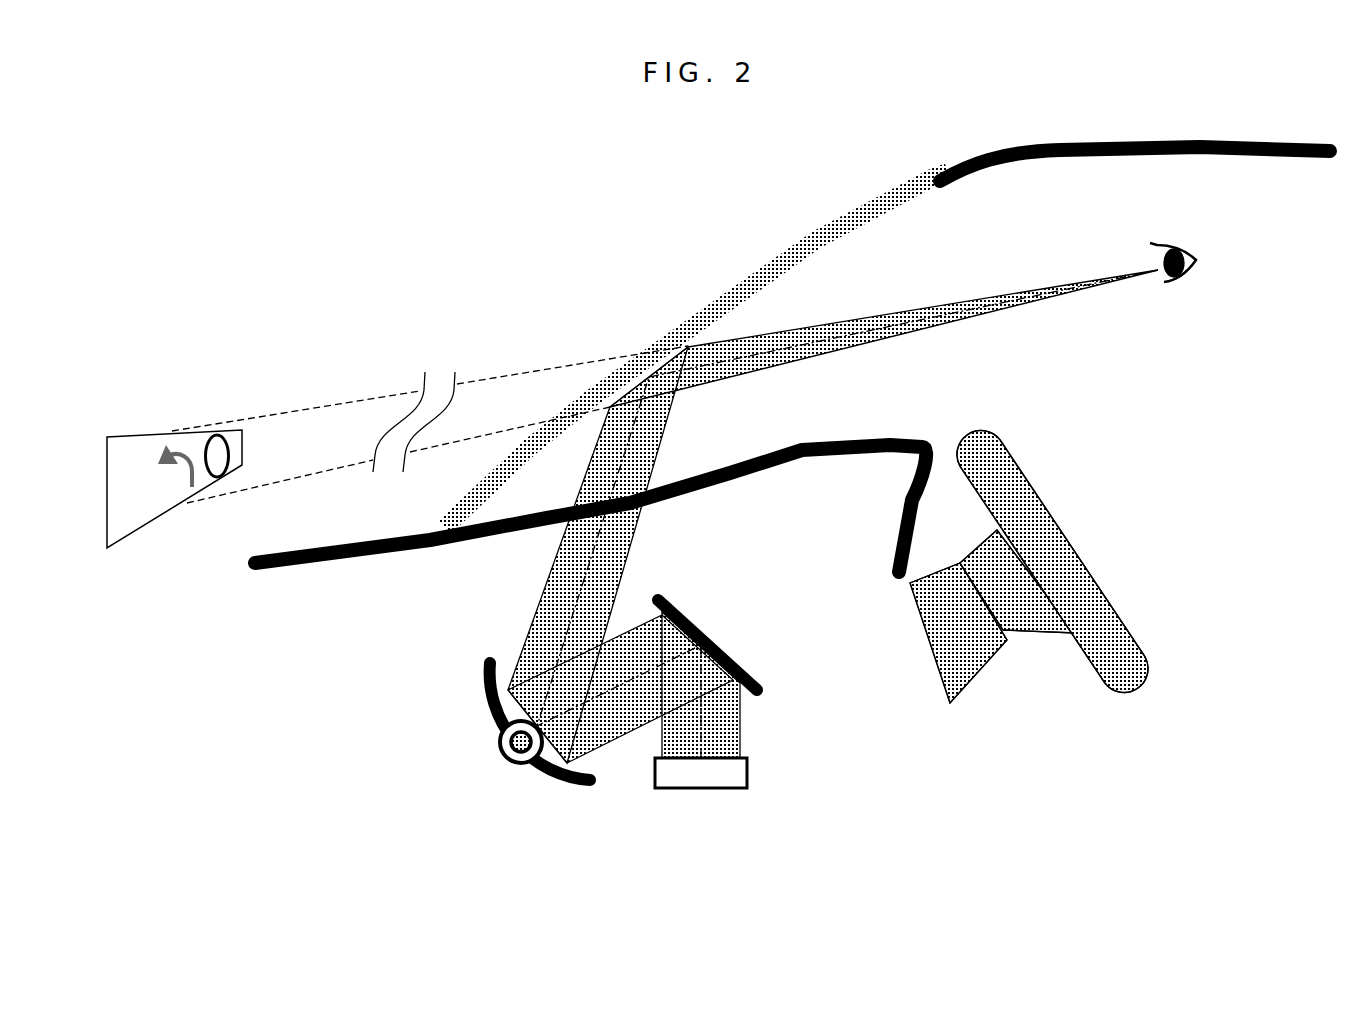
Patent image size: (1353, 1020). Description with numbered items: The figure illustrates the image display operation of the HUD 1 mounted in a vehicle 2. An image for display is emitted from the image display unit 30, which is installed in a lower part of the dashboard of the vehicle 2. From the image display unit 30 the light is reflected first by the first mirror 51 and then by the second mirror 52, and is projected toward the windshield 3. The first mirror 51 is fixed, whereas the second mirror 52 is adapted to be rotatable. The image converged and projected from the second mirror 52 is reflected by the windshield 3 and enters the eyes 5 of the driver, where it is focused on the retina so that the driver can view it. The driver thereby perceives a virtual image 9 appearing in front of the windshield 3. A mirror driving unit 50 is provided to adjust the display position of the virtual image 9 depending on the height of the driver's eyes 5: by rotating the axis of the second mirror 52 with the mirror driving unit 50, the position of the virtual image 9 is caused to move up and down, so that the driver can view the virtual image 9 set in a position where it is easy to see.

The HUD 1 is at (371, 683).
The vehicle 2 is at (1052, 142).
The windshield 3 is at (729, 295).
The eyes 5 is at (1183, 285).
The virtual image 9 is at (153, 433).
The image display unit 30 is at (700, 790).
The mirror driving unit 50 is at (505, 757).
The first mirror 51 is at (730, 643).
The second mirror 52 is at (490, 703).